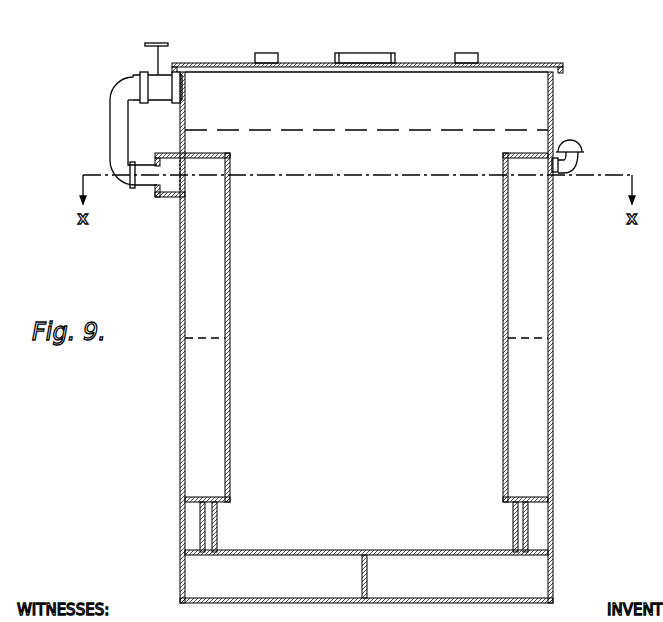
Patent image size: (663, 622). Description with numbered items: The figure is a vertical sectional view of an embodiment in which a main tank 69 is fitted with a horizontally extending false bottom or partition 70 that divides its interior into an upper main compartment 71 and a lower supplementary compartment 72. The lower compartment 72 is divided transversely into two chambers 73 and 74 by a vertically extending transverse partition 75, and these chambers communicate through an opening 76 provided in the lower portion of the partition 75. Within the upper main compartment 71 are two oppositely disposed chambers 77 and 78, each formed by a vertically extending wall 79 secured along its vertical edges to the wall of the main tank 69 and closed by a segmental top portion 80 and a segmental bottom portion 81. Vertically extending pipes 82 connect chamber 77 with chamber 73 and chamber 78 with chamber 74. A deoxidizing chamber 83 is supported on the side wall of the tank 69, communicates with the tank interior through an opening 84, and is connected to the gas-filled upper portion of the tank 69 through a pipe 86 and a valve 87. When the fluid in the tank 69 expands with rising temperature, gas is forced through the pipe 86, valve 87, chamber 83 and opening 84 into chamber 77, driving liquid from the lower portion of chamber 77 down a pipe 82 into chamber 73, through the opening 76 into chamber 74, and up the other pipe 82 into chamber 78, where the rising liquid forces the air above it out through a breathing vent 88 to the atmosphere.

The main tank 69 is at (553, 268).
The false bottom or partition 70 is at (305, 550).
The upper main compartment 71 is at (354, 325).
The lower supplementary compartment 72 is at (336, 588).
The chamber 73 is at (276, 588).
The chamber 74 is at (456, 588).
The transverse partition 75 is at (368, 567).
The opening 76 is at (368, 593).
The chamber 77 is at (216, 325).
The chamber 78 is at (539, 325).
The vertically extending wall 79 is at (231, 272).
The segmental top portion 80 is at (213, 152).
The segmental bottom portion 81 is at (223, 508).
The vertically extending pipe 82 is at (203, 529).
The deoxidizing chamber 83 is at (165, 185).
The opening 84 is at (182, 177).
The pipe 86 is at (118, 148).
The valve 87 is at (162, 80).
The breathing vent 88 is at (573, 143).